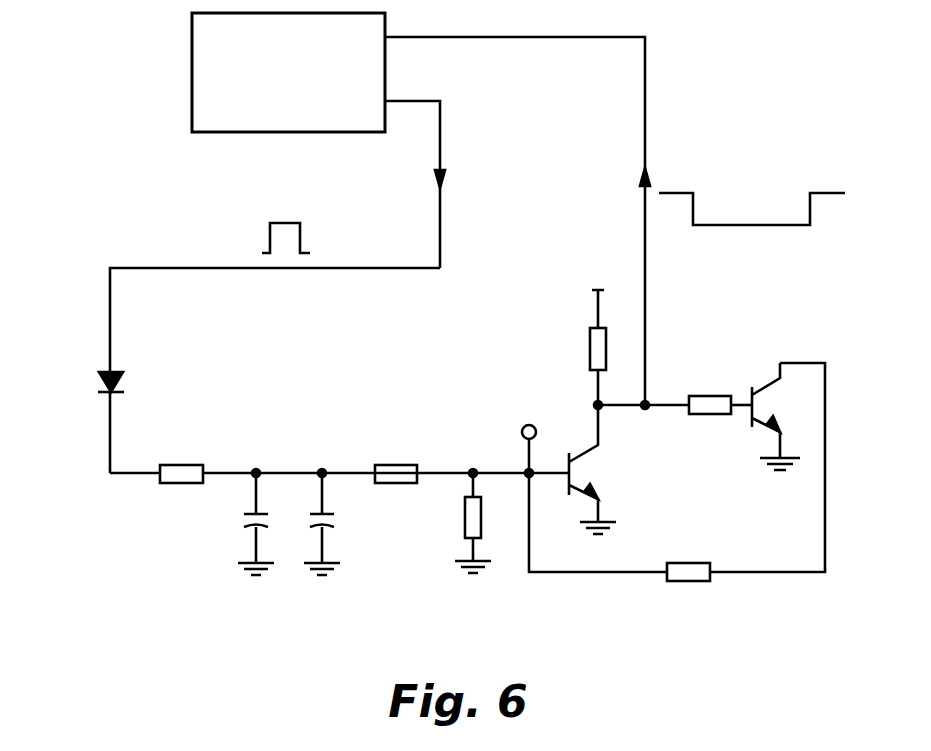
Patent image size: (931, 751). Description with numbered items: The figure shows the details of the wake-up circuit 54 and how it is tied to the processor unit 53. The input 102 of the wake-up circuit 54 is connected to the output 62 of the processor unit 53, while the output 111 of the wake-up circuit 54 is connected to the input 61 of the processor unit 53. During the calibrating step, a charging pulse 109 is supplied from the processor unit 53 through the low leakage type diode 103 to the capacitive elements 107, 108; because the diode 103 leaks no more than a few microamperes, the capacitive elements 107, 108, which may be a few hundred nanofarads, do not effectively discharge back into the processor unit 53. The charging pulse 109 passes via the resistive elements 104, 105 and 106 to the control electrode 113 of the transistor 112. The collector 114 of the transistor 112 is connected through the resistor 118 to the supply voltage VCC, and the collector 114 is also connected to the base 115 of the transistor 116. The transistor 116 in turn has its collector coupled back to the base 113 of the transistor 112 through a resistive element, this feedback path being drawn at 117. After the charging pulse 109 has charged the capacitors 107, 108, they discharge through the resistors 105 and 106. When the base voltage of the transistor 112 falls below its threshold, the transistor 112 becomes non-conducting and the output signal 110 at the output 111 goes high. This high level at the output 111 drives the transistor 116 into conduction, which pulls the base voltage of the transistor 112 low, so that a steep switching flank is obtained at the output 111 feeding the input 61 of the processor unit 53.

The processor unit 53 is at (192, 90).
The input of the processor unit 61 is at (466, 39).
The output of the processor unit 62 is at (442, 115).
The wake-up circuit 54 is at (749, 338).
The input of the wake-up circuit 102 is at (110, 338).
The low leakage type diode 103 is at (100, 393).
The resistive element 104 is at (168, 485).
The resistive element 105 is at (400, 465).
The resistive element 106 is at (464, 522).
The capacitive element 107 is at (250, 526).
The capacitive element 108 is at (316, 527).
The charging pulse 109 is at (266, 248).
The output signal 110 is at (776, 223).
The output of the wake-up unit 111 is at (652, 404).
The transistor 112 is at (587, 473).
The control electrode 113 is at (548, 476).
The collector 114 is at (598, 418).
The base 115 is at (742, 404).
The transistor 116 is at (781, 401).
The collector line 117 is at (810, 362).
The resistor 118 is at (590, 342).